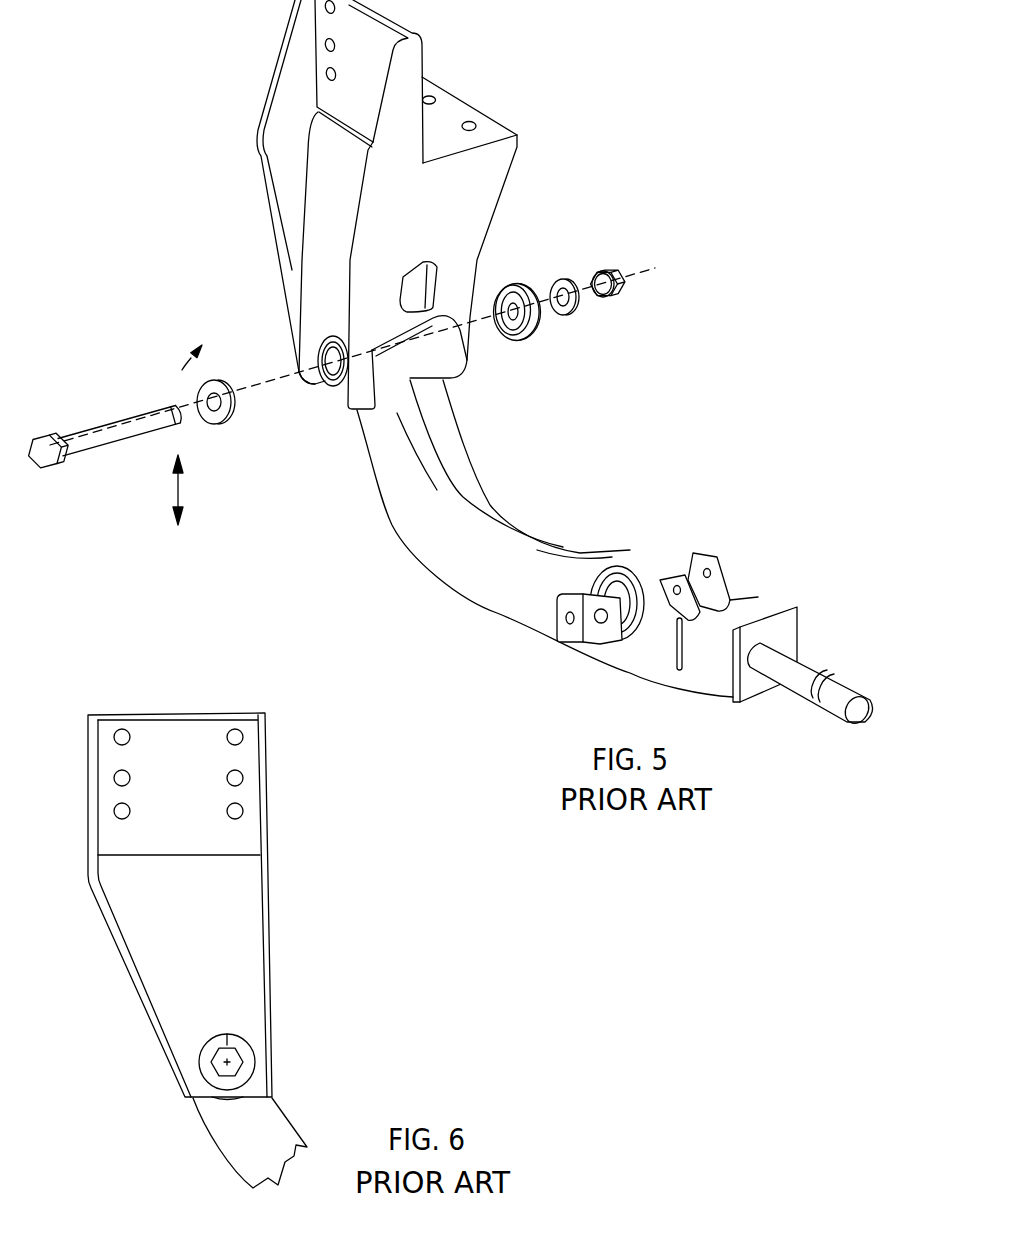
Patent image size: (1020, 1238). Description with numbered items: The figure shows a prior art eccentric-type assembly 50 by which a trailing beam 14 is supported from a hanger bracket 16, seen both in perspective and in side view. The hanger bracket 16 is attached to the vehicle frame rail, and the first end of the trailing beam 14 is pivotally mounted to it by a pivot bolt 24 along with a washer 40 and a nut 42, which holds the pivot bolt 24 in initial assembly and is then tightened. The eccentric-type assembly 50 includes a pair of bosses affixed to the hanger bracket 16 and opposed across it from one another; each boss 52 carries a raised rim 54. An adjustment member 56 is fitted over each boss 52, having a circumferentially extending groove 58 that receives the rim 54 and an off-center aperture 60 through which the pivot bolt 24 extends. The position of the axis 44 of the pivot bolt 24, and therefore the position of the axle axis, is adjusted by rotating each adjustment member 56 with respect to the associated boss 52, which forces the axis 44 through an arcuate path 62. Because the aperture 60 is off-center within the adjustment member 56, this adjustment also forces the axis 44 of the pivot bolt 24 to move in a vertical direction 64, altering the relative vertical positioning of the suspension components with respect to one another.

In FIG. 5, the trailing beam 14 is at (387, 505).
In FIG. 6, the trailing beam 14 is at (227, 1153).
In FIG. 5, the hanger bracket 16 is at (262, 207).
In FIG. 6, the hanger bracket 16 is at (115, 945).
In FIG. 5, the pivot bolt 24 is at (90, 443).
In FIG. 6, the pivot bolt 24 is at (212, 1057).
In FIG. 5, the washer 40 is at (566, 313).
In FIG. 5, the nut 42 is at (614, 301).
In FIG. 5, the axis of the pivot bolt 44 is at (643, 268).
In FIG. 6, the axis of the pivot bolt 44 is at (215, 1067).
In FIG. 5, the eccentric-type assembly 50 is at (351, 334).
In FIG. 6, the eccentric-type assembly 50 is at (228, 1061).
In FIG. 5, the boss 52 is at (318, 336).
In FIG. 5, the raised rim 54 is at (330, 384).
In FIG. 5, the adjustment member 56 is at (212, 424).
In FIG. 6, the adjustment member 56 is at (248, 1057).
In FIG. 5, the circumferentially extending groove 58 is at (496, 286).
In FIG. 5, the off-center aperture 60 is at (505, 322).
In FIG. 5, the arcuate path 62 is at (182, 370).
In FIG. 5, the vertical direction 64 is at (180, 488).